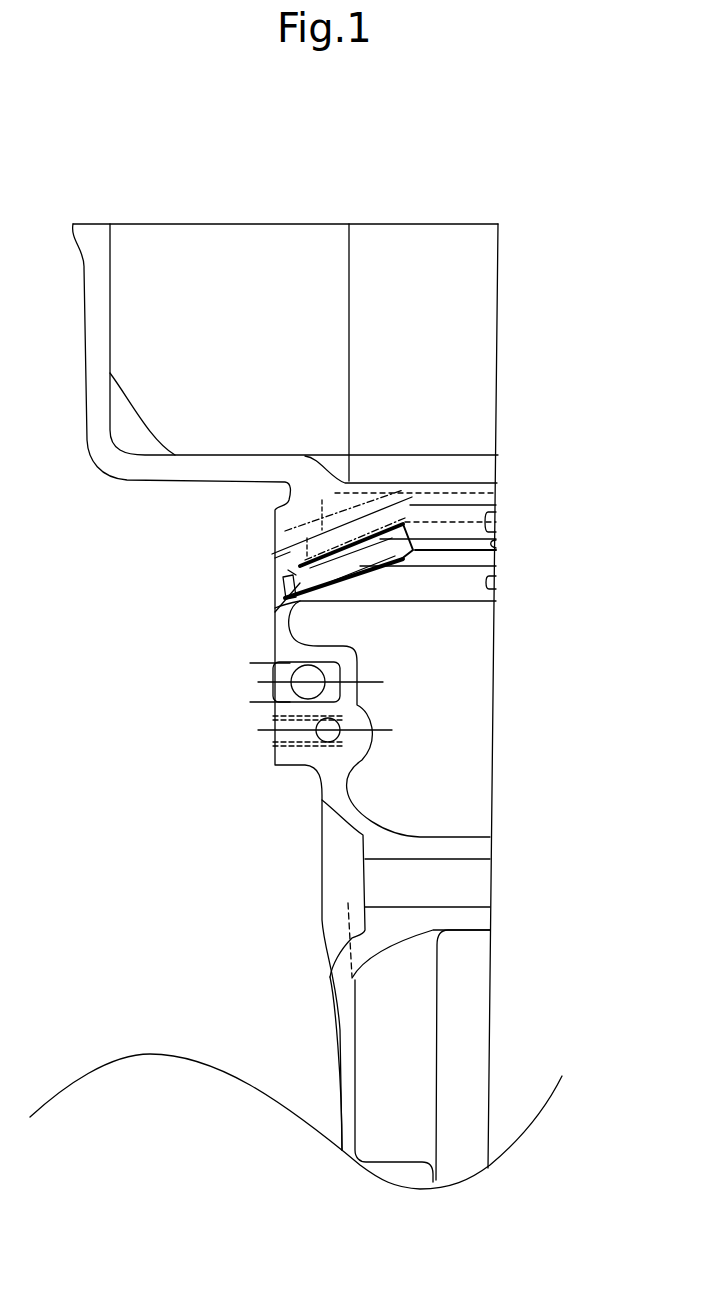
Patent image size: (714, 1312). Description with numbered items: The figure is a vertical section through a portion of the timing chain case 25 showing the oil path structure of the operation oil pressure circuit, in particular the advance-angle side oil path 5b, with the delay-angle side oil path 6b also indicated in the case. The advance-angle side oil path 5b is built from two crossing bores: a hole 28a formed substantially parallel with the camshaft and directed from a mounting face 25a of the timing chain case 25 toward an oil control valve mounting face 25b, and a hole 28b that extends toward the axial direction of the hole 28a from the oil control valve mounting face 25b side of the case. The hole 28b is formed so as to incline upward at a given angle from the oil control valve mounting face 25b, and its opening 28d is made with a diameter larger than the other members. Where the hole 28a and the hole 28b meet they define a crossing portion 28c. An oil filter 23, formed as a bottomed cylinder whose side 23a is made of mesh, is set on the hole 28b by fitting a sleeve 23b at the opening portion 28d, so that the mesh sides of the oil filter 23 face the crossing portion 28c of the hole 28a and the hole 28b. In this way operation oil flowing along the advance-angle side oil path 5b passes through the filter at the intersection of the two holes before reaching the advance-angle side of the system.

The timing chain case 25 is at (125, 481).
The mounting face 25a is at (500, 590).
The oil control valve mounting face 25b is at (275, 637).
The oil filter 23 is at (275, 592).
The side 23a is at (407, 562).
The sleeve 23b is at (275, 557).
The hole 28a is at (497, 545).
The hole 28b is at (347, 578).
The crossing portion 28c is at (396, 570).
The opening 28d is at (275, 608).
The advance-angle side oil path 5b is at (500, 560).
The delay-angle side oil path 6b is at (499, 499).